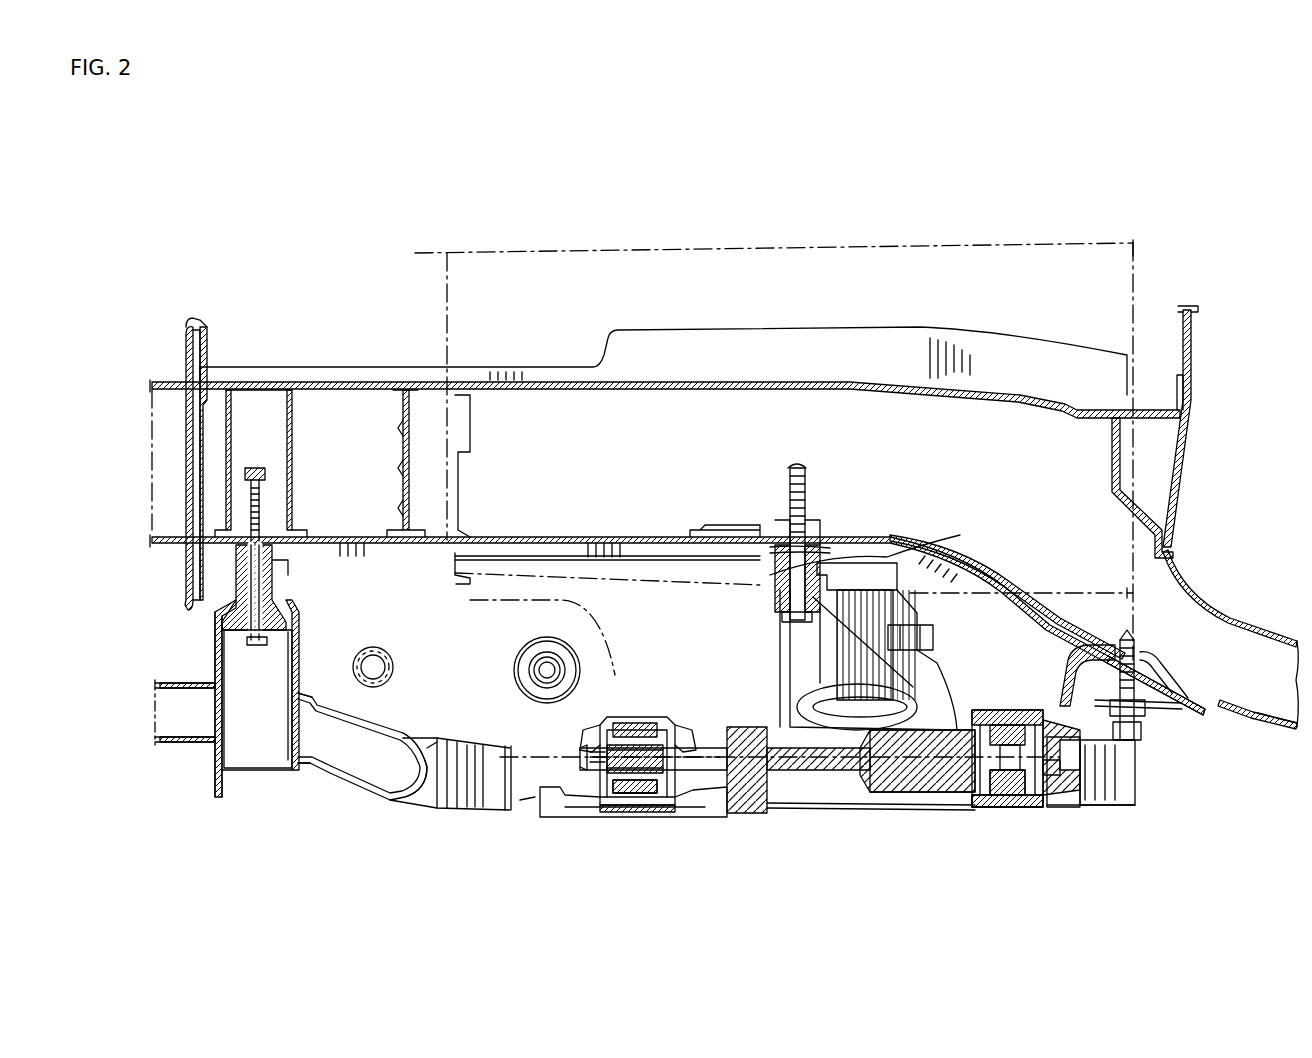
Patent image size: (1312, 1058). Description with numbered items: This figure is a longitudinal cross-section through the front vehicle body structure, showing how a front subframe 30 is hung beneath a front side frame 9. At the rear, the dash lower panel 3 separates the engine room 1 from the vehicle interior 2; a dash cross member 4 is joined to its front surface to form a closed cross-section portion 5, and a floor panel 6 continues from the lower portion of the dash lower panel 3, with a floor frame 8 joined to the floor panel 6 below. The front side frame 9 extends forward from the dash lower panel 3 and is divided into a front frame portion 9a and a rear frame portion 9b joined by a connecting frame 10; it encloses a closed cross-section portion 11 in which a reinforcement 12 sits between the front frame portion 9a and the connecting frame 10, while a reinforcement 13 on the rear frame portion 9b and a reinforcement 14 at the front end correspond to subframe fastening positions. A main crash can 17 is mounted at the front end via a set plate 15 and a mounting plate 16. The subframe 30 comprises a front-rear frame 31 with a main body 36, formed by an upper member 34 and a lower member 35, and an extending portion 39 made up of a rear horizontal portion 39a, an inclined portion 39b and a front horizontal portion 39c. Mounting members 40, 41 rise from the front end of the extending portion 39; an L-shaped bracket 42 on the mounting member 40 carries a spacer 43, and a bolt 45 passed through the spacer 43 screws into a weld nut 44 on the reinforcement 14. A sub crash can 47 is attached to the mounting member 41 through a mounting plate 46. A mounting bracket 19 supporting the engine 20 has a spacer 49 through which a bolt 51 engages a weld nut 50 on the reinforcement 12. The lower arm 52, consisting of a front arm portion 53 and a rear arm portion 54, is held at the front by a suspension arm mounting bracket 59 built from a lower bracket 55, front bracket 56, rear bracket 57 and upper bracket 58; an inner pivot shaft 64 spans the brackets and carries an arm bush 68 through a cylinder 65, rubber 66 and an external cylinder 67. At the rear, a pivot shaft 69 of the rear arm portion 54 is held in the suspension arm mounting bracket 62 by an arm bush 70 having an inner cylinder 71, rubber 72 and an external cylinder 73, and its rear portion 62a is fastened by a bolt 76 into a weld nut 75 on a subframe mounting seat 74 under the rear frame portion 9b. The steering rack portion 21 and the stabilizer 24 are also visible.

The engine room 1 is at (392, 305).
The vehicle interior 2 is at (1274, 425).
The dash lower panel 3 is at (1192, 345).
The dash cross member 4 is at (1112, 460).
The closed cross-section portion 5 is at (1162, 449).
The floor panel 6 is at (1272, 618).
The floor frame 8 is at (1240, 710).
The front side frame 9 is at (716, 375).
The front frame portion 9a is at (574, 537).
The rear frame portion 9b is at (1190, 690).
The connecting frame 10 is at (1008, 580).
The closed cross-section portion 11 is at (560, 451).
The reinforcement 12 is at (720, 530).
The reinforcement 13 is at (1140, 655).
The reinforcement 14 is at (304, 535).
The set plate 15 is at (207, 362).
The mounting plate 16 is at (186, 375).
The main crash can 17 is at (165, 545).
The mounting bracket 19 is at (945, 655).
The engine 20 is at (444, 335).
The steering rack portion 21 is at (522, 660).
The stabilizer 24 is at (378, 648).
The subframe 30 is at (492, 745).
The front-rear frame 31 is at (440, 740).
The upper member 34 is at (1120, 806).
The lower member 35 is at (1072, 808).
The main body 36 is at (523, 818).
The extending portion 39 is at (355, 790).
The rear horizontal portion 39a is at (470, 805).
The inclined portion 39b is at (413, 805).
The front horizontal portion 39c is at (308, 770).
The mounting member 40 is at (294, 640).
The mounting member 41 is at (224, 670).
The L-shaped bracket 42 is at (288, 665).
The spacer 43 is at (280, 605).
The weld nut 44 is at (262, 483).
The bolt 45 is at (272, 590).
The mounting plate 46 is at (215, 660).
The sub crash can 47 is at (182, 742).
The spacer 49 is at (775, 590).
The weld nut 50 is at (806, 510).
The bolt 51 is at (770, 575).
The lower arm 52 is at (853, 807).
The front arm portion 53 is at (681, 710).
The rear arm portion 54 is at (745, 800).
The lower bracket 55 is at (610, 817).
The front bracket 56 is at (585, 738).
The rear bracket 57 is at (690, 730).
The upper bracket 58 is at (640, 720).
The suspension arm mounting bracket 59 is at (604, 720).
The suspension arm mounting bracket 62 is at (985, 710).
The rear portion 62a is at (1145, 740).
The inner pivot shaft 64 is at (625, 760).
The cylinder 65 is at (640, 760).
The rubber 66 is at (628, 742).
The external cylinder 67 is at (650, 795).
The arm bush 68 is at (665, 725).
The pivot shaft 69 is at (1005, 800).
The arm bush 70 is at (1010, 720).
The inner cylinder 71 is at (1052, 722).
The rubber 72 is at (1010, 740).
The external cylinder 73 is at (985, 808).
The subframe mounting seat 74 is at (1165, 708).
The weld nut 75 is at (1140, 640).
The bolt 76 is at (1125, 630).